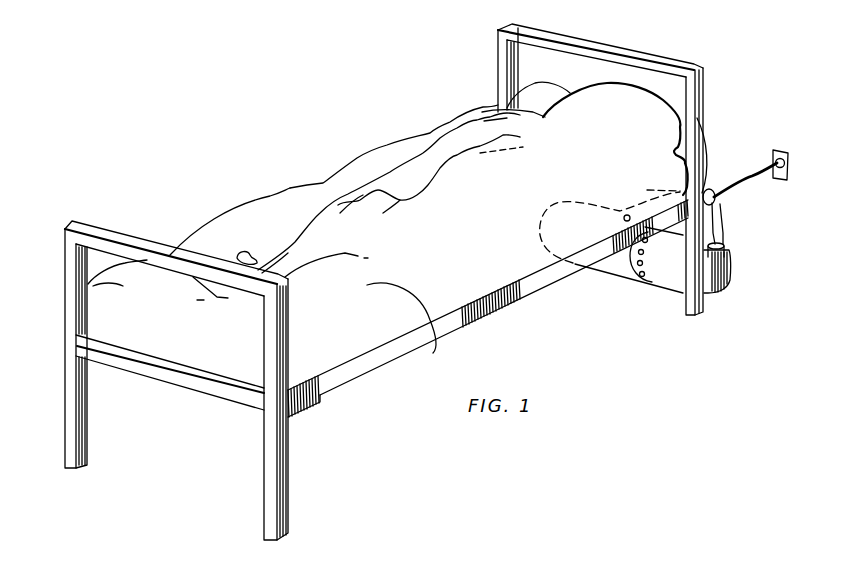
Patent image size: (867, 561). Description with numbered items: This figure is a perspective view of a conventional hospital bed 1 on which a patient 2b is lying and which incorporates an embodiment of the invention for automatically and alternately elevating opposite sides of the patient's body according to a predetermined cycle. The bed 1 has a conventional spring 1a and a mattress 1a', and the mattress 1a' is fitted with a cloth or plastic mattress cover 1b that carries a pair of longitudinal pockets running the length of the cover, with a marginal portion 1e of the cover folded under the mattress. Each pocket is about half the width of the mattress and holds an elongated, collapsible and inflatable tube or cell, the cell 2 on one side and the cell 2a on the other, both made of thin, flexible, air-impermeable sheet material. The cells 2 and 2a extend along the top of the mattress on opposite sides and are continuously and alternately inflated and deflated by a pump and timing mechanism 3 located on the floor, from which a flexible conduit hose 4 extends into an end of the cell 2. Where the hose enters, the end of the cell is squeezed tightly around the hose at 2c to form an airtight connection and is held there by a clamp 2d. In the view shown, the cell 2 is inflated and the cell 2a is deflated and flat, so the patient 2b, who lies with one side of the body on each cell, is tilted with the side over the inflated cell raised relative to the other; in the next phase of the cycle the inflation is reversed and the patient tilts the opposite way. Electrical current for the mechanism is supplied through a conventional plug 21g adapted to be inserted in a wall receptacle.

The hospital bed 1 is at (380, 364).
The spring 1a is at (138, 372).
The mattress 1a' is at (120, 282).
The mattress cover 1b is at (437, 352).
The marginal portion 1e is at (320, 370).
The inflatable cell 2 is at (473, 286).
The inflatable cell 2a is at (298, 207).
The patient 2b is at (437, 160).
The clamped end of cell 2c is at (704, 192).
The clamp 2d is at (715, 192).
The plug 21g is at (788, 164).
The pump and timing mechanism 3 is at (729, 272).
The flexible conduit hose 4 is at (723, 223).